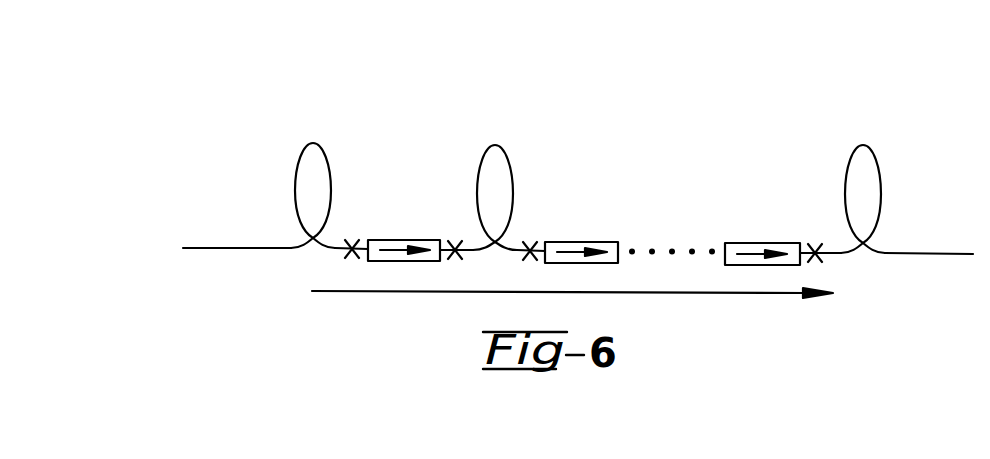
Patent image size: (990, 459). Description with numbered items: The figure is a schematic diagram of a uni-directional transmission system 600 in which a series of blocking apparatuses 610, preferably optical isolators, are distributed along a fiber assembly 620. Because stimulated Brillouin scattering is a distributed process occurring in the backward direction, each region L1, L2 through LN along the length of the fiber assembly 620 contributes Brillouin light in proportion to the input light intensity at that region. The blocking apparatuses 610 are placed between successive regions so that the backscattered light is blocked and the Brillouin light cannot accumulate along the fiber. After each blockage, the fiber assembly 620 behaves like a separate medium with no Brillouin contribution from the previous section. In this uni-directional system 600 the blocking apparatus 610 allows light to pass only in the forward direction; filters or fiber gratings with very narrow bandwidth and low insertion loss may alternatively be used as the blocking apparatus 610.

The uni-directional transmission system 600 is at (650, 86).
The blocking apparatus 610 is at (401, 240).
The fiber assembly 620 is at (933, 253).
The first region of the fiber assembly L1 is at (234, 248).
The second region of the fiber assembly L2 is at (497, 145).
The Nth region of the fiber assembly LN is at (850, 252).